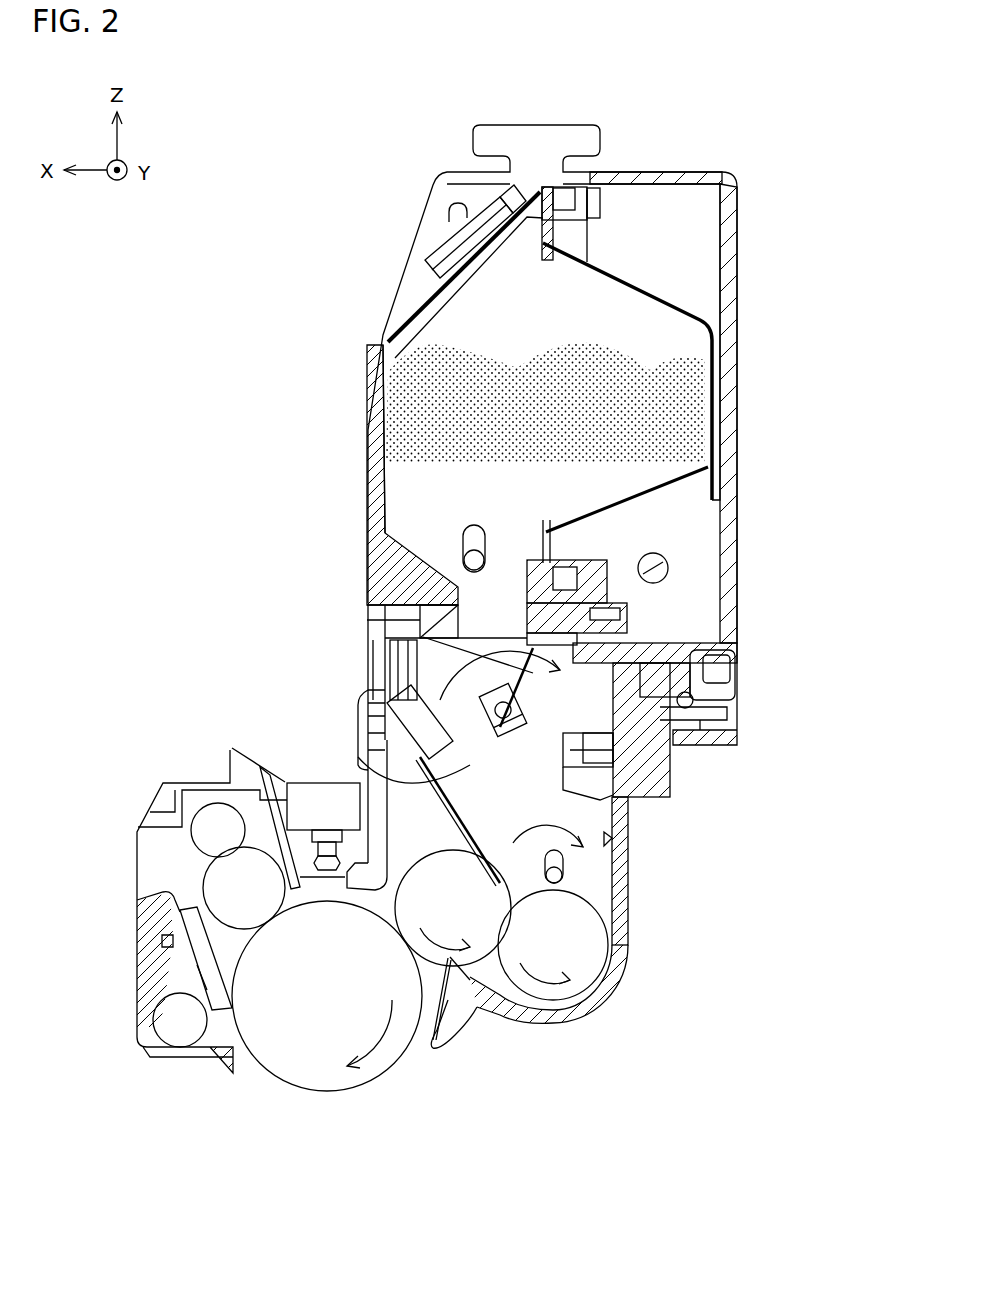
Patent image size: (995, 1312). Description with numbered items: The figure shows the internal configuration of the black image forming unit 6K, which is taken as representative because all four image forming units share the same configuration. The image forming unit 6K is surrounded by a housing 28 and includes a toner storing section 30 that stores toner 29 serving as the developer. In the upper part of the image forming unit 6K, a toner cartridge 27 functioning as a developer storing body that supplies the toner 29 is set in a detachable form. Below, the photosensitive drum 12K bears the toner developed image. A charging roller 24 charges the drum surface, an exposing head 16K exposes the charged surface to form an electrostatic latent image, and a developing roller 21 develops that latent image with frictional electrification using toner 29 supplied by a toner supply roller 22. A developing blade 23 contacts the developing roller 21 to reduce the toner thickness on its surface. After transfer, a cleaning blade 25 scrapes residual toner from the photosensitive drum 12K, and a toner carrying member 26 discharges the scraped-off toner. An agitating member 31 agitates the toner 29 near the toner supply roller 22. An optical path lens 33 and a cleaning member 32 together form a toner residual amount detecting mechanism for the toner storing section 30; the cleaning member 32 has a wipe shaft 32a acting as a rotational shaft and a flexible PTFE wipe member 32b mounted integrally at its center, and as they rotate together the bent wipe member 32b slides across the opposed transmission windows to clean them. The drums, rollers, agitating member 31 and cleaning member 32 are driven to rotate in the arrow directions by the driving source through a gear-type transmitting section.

The image forming unit 6K is at (750, 152).
The photosensitive drum 12K is at (300, 1077).
The exposing head 16K is at (317, 780).
The developing roller 21 is at (480, 1007).
The toner supply roller 22 is at (590, 962).
The developing blade 23 is at (363, 767).
The charging roller 24 is at (212, 880).
The cleaning blade 25 is at (193, 952).
The toner carrying member 26 is at (177, 1027).
The toner cartridge 27 is at (366, 403).
The housing 28 is at (630, 937).
The toner 29 is at (690, 385).
The toner storing section 30 is at (607, 838).
The agitating member 31 is at (560, 877).
The cleaning member 32 is at (533, 710).
The wipe shaft 32a is at (490, 735).
The wipe member 32b is at (392, 617).
The optical path lens 33 is at (665, 752).